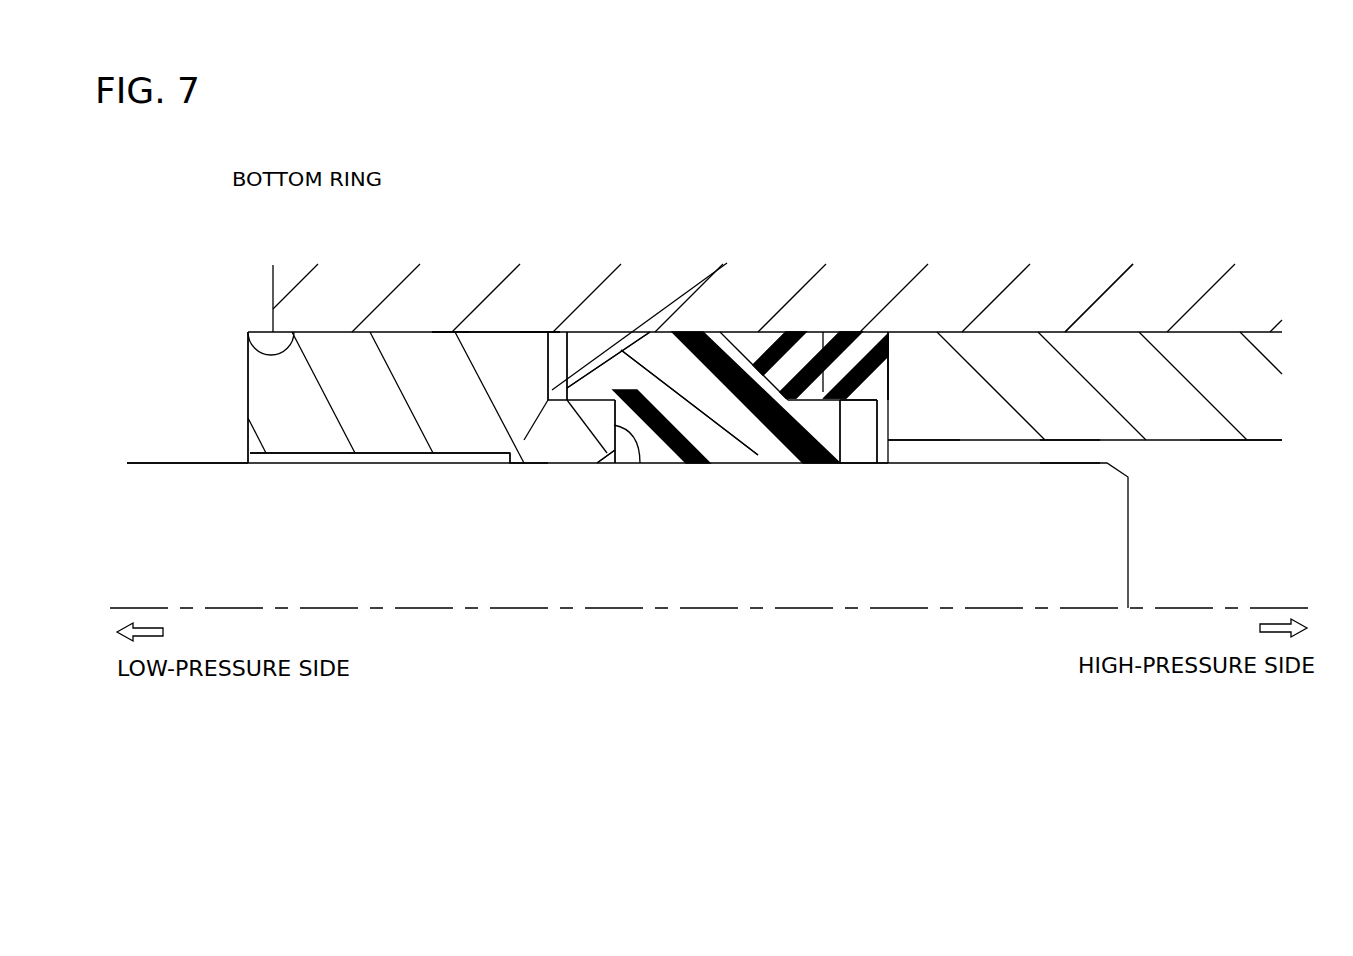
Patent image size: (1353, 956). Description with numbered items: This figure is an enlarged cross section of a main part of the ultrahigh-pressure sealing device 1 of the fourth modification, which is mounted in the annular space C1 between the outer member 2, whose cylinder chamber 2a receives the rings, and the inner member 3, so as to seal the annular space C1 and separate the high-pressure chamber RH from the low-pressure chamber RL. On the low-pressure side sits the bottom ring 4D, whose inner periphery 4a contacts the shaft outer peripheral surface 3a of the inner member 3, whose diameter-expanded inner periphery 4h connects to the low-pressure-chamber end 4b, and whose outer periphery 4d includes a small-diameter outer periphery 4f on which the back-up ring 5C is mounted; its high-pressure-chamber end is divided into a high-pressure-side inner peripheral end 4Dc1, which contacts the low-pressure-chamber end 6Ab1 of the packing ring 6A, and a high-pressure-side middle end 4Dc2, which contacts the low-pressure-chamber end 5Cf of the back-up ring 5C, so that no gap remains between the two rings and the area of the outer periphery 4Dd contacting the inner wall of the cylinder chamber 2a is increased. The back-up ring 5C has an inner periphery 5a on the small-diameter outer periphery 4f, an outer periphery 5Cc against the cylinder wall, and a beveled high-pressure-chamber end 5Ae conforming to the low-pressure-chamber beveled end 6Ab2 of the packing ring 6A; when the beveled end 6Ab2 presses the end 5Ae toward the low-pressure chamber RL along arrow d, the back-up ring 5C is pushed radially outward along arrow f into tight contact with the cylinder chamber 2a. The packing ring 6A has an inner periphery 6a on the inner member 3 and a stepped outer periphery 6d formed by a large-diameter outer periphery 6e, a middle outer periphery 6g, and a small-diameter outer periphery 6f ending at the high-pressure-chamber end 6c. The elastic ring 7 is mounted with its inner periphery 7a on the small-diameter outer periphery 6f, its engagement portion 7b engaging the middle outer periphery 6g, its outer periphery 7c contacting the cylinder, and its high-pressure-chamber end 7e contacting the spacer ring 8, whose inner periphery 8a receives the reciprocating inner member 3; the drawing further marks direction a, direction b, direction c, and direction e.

The ultrahigh-pressure sealing device 1 is at (1078, 203).
The outer member 2 is at (272, 283).
The cylinder chamber 2a is at (248, 350).
The inner member 3 is at (1133, 517).
The shaft outer peripheral surface 3a is at (148, 463).
The bottom ring 4D is at (336, 323).
The low-pressure-chamber end 4b is at (248, 388).
The diameter-expanded inner periphery 4h is at (377, 468).
The inner periphery 4a is at (532, 468).
The outer periphery 4d is at (535, 208).
The outer periphery 4Dd is at (432, 330).
The small-diameter outer periphery 4f is at (560, 330).
The high-pressure-side inner peripheral end 4Dc1 is at (628, 465).
The high-pressure-side middle end 4Dc2 is at (548, 375).
The back-up ring 5C is at (572, 330).
The outer periphery 5Cc is at (573, 330).
The low-pressure-chamber end 5Cf is at (548, 350).
The high-pressure-chamber end 5Ae is at (665, 330).
The inner periphery 5a is at (560, 402).
The packing ring 6A is at (707, 330).
The low-pressure-chamber end 6Ab1 is at (600, 468).
The low-pressure-chamber beveled end 6Ab2 is at (623, 330).
The inner periphery 6a is at (757, 458).
The outer periphery 6d is at (822, 208).
The large-diameter outer periphery 6e is at (743, 330).
The middle outer periphery 6g is at (755, 330).
The small-diameter outer periphery 6f is at (827, 330).
The high-pressure-chamber end 6c is at (890, 466).
The elastic ring 7 is at (870, 327).
The inner periphery 7a is at (850, 465).
The engagement portion 7b is at (795, 466).
The outer periphery 7c is at (883, 332).
The high-pressure-chamber end 7e is at (893, 365).
The spacer ring 8 is at (1182, 407).
The inner periphery 8a is at (893, 403).
The annular space C1 is at (1067, 457).
The low-pressure chamber RL is at (182, 410).
The high-pressure chamber RH is at (1185, 565).
The direction a is at (987, 390).
The direction b is at (770, 465).
The direction c is at (838, 327).
The arrow d is at (668, 370).
The direction e is at (562, 470).
The arrow f is at (595, 327).